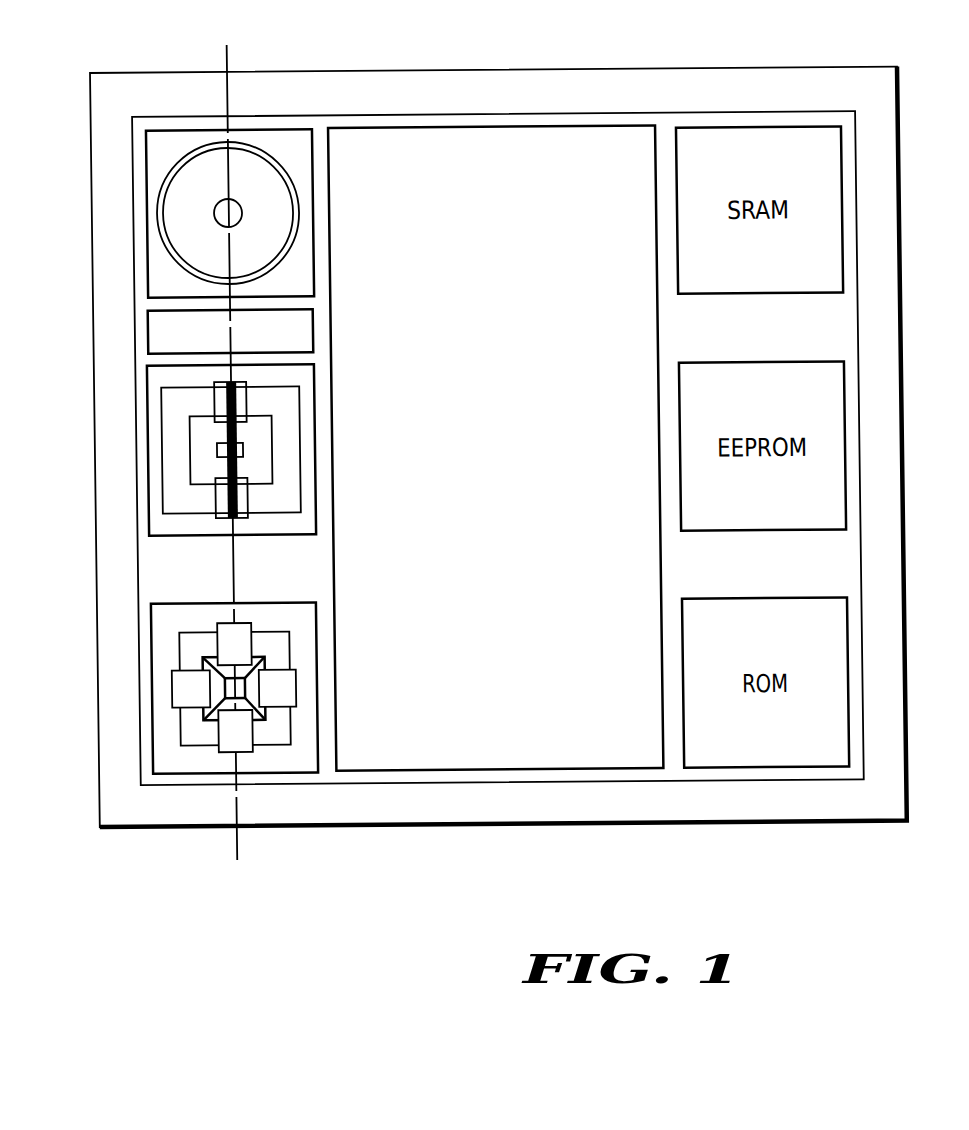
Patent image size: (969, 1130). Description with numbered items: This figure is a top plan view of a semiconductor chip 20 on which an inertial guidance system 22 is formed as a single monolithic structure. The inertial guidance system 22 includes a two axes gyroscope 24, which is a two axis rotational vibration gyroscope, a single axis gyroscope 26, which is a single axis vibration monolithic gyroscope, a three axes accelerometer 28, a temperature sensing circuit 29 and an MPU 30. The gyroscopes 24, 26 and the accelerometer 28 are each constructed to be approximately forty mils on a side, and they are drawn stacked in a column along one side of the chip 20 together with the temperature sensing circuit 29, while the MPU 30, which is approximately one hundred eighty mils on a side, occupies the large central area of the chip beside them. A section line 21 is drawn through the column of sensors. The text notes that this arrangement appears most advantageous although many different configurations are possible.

The semiconductor chip 20 is at (505, 816).
The section line 21 is at (274, 453).
The inertial guidance system 22 is at (69, 570).
The two axes gyroscope 24 is at (298, 215).
The single axis gyroscope 26 is at (270, 460).
The three axes accelerometer 28 is at (288, 687).
The temperature sensing circuit 29 is at (312, 332).
The MPU 30 is at (504, 576).